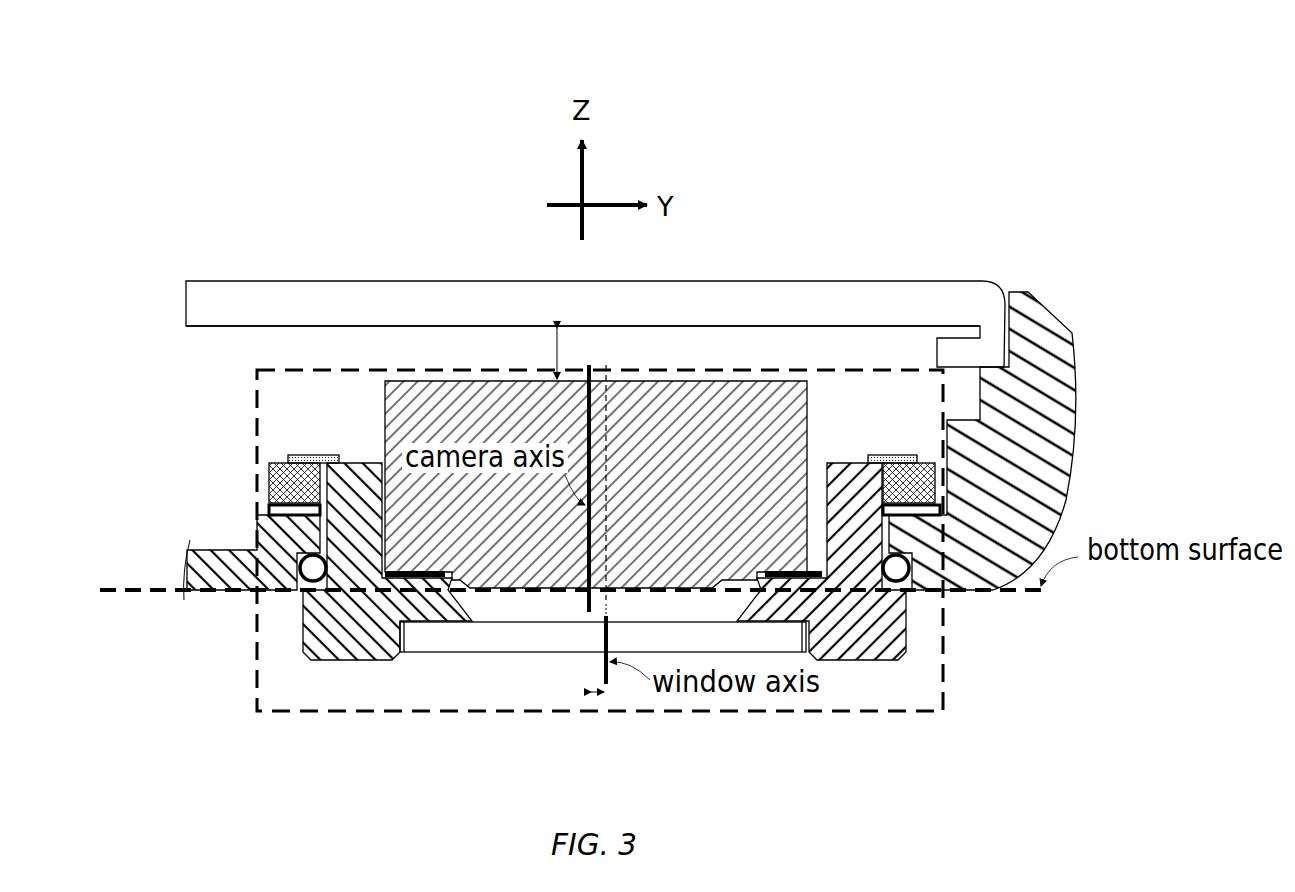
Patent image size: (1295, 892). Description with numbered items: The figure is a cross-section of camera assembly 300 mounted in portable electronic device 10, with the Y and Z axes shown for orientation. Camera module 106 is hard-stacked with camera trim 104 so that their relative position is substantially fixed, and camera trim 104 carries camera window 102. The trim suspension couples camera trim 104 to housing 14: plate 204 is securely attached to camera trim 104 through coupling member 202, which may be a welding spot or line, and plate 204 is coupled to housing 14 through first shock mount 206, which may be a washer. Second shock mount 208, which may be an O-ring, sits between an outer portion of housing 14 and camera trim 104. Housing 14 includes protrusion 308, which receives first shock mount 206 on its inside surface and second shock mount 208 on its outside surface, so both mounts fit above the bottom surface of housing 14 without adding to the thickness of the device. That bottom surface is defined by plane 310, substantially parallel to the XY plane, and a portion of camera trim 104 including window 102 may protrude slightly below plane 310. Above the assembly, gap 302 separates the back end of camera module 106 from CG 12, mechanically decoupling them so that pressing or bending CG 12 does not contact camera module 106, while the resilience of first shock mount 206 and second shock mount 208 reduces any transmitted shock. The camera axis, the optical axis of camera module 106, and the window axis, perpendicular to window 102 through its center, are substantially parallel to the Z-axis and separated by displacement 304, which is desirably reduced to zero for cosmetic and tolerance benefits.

The portable electronic device 10 is at (170, 56).
The CG 12 is at (595, 324).
The housing 14 is at (630, 446).
The camera window 102 is at (603, 637).
The camera trim 104 is at (604, 561).
The camera module 106 is at (603, 484).
The coupling member 202 is at (330, 455).
The plate 204 is at (935, 462).
The first shock mount 206 is at (268, 510).
The second shock mount 208 is at (296, 572).
The camera assembly 300 is at (436, 714).
The gap 302 is at (534, 353).
The displacement 304 is at (579, 653).
The protrusion 308 is at (305, 537).
The plane 310 is at (1040, 592).